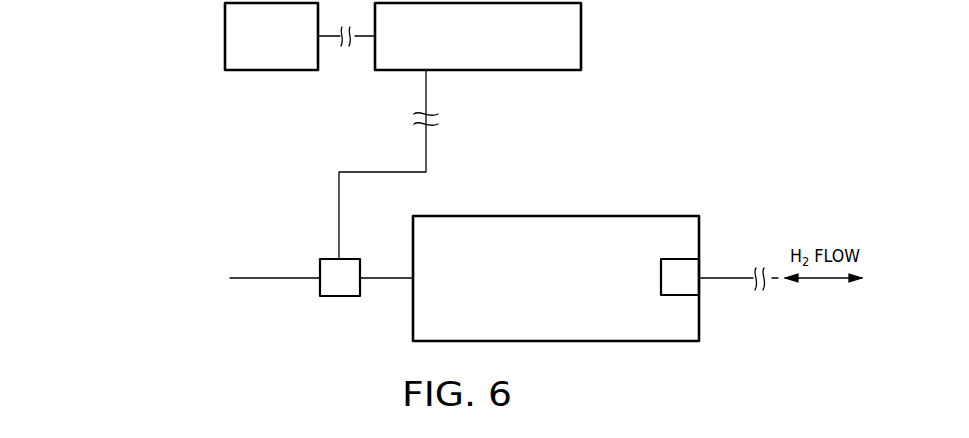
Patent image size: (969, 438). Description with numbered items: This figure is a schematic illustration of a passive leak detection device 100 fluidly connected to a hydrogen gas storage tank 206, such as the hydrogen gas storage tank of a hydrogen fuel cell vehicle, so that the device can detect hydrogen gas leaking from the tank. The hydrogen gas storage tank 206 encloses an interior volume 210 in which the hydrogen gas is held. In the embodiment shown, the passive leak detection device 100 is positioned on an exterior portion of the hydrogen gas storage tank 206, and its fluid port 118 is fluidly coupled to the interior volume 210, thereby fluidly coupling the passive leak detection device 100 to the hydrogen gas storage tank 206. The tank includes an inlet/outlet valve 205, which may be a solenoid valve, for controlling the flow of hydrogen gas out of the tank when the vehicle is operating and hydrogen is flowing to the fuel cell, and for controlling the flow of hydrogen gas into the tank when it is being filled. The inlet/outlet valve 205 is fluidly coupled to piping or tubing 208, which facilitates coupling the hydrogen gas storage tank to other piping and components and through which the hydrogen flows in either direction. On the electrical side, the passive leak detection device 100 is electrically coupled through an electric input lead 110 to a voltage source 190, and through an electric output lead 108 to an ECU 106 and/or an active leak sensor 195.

The passive leak detection device 100 is at (325, 310).
The ECU 106 is at (582, 33).
The electric output lead 108 is at (426, 92).
The electric input lead 110 is at (287, 277).
The fluid port 118 is at (386, 280).
The voltage source 190 is at (151, 263).
The active leak sensor 195 is at (225, 36).
The inlet/outlet valve 205 is at (661, 266).
The hydrogen gas storage tank 206 is at (650, 200).
The piping or tubing 208 is at (728, 277).
The interior volume 210 is at (435, 252).